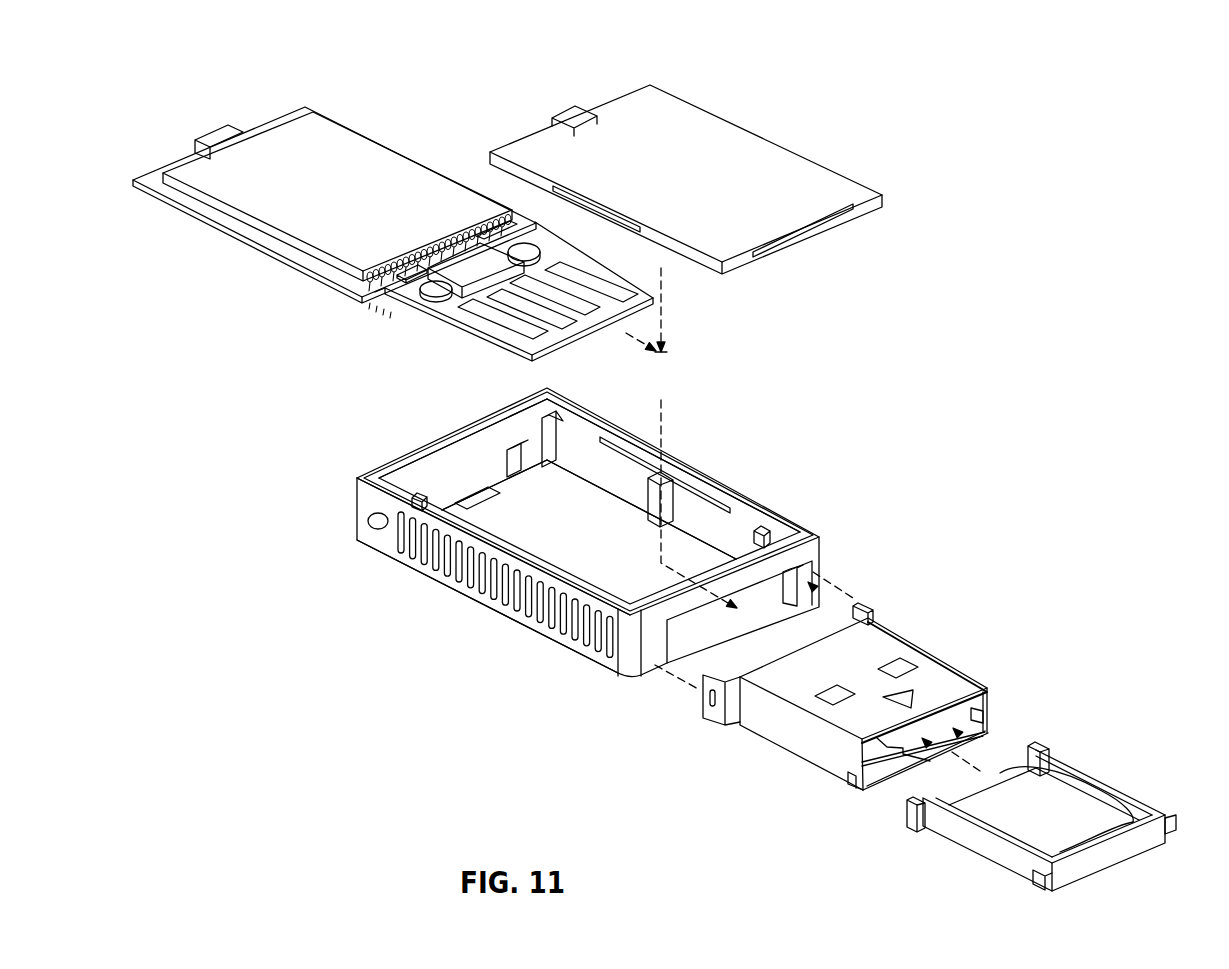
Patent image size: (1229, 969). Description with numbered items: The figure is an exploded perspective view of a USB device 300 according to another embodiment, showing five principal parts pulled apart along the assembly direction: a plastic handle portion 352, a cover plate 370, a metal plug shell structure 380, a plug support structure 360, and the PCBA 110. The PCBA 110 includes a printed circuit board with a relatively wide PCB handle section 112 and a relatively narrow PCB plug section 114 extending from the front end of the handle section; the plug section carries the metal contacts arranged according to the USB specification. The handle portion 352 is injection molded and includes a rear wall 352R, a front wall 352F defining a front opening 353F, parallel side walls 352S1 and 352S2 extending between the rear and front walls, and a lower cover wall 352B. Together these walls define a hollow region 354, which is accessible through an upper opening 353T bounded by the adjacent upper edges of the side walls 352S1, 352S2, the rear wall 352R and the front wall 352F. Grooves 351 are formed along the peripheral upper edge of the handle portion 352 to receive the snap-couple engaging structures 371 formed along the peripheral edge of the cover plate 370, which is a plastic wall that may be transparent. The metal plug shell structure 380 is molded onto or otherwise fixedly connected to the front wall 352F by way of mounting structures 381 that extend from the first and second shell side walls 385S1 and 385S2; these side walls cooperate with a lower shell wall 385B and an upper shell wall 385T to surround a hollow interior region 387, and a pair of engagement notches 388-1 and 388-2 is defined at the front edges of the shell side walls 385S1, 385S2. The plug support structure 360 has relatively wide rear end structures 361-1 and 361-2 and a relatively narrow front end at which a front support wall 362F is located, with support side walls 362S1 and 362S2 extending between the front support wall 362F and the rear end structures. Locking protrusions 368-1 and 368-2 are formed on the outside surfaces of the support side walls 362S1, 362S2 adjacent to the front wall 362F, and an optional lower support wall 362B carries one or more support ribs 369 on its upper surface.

The USB device 300 is at (209, 79).
The PCBA 110 is at (189, 127).
The PCB handle section 112 is at (254, 251).
The PCB plug section 114 is at (434, 316).
The cover plate 370 is at (736, 124).
The snap-couple engaging structures 371 is at (846, 213).
The plastic handle portion 352 is at (708, 456).
The rear wall 352R is at (524, 432).
The lower cover wall 352B is at (574, 495).
The front wall 352F is at (651, 662).
The first side wall 352S1 is at (480, 600).
The second side wall 352S2 is at (752, 524).
The grooves 351 is at (667, 474).
The upper opening 353T is at (622, 353).
The front opening 353F is at (799, 585).
The hollow region 354 is at (628, 556).
The metal plug shell structure 380 is at (989, 651).
The mounting structures 381 is at (856, 606).
The upper shell wall 385T is at (884, 654).
The first shell side wall 385S1 is at (775, 723).
The second shell side wall 385S2 is at (986, 700).
The lower shell wall 385B is at (880, 790).
The hollow interior region 387 is at (965, 738).
The first engagement notch 388-1 is at (846, 776).
The second engagement notch 388-2 is at (984, 712).
The plug support structure 360 is at (1156, 766).
The first rear end structure 361-1 is at (904, 826).
The second rear end structure 361-2 is at (1051, 736).
The lower support wall 362B is at (1030, 822).
The first support side wall 362S1 is at (960, 850).
The second support side wall 362S2 is at (1112, 778).
The front support wall 362F is at (1098, 864).
The first locking protrusion 368-1 is at (1030, 878).
The second locking protrusion 368-2 is at (1168, 818).
The support ribs 369 is at (1090, 840).